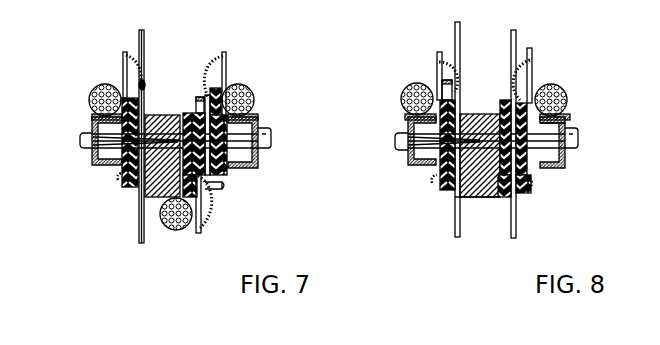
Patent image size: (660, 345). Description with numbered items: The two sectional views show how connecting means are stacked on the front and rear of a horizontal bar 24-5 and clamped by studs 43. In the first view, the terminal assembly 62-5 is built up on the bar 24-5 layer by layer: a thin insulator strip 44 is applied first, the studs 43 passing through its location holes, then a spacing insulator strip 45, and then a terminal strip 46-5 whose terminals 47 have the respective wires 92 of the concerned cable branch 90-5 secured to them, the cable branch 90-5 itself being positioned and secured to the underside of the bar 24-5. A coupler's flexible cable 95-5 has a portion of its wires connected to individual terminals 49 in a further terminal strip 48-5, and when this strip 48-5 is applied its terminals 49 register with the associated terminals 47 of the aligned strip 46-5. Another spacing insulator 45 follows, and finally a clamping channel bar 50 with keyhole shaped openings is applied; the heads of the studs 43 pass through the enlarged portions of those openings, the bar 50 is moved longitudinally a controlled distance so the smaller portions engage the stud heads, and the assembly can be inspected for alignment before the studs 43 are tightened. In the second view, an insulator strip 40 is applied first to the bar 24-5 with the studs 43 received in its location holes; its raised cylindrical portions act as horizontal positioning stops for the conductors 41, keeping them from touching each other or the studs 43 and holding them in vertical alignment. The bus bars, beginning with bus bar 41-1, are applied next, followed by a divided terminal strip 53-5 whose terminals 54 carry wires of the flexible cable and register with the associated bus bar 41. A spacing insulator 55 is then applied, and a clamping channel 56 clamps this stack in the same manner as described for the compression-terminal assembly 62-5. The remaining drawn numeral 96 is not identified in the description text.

In FIG. 7, the horizontal bar 24-5 is at (163, 113).
In FIG. 8, the horizontal bar 24-5 is at (485, 113).
In FIG. 7, the insulator strip 40 is at (143, 226).
In FIG. 8, the insulator strip 40 is at (464, 197).
In FIG. 7, the conductors 41 is at (138, 228).
In FIG. 8, the bus bar 41-1 is at (516, 235).
In FIG. 7, the studs 43 is at (86, 136).
In FIG. 8, the studs 43 is at (397, 136).
In FIG. 7, the thin insulator strip 44 is at (196, 112).
In FIG. 7, the spacing insulator strip 45 is at (199, 101).
In FIG. 7, the terminal strip 46-5 is at (210, 205).
In FIG. 7, the terminals 47 is at (200, 228).
In FIG. 7, the terminal strip 48-5 is at (222, 185).
In FIG. 7, the terminals 49 is at (225, 55).
In FIG. 7, the clamping channel bar 50 is at (256, 118).
In FIG. 8, the divided terminal strip 53-5 is at (526, 185).
In FIG. 8, the terminals 54 is at (532, 78).
In FIG. 8, the spacing insulator 55 is at (565, 158).
In FIG. 8, the clamping channel 56 is at (567, 122).
In FIG. 7, the terminal assembly 62-5 is at (237, 81).
In FIG. 7, the cable branch 90-5 is at (180, 230).
In FIG. 7, the wires 92 is at (208, 218).
In FIG. 7, the flexible cable 95-5 is at (253, 95).
In FIG. 8, the flexible cable 95-5 is at (566, 97).
In FIG. 8, the spring 96 is at (515, 68).